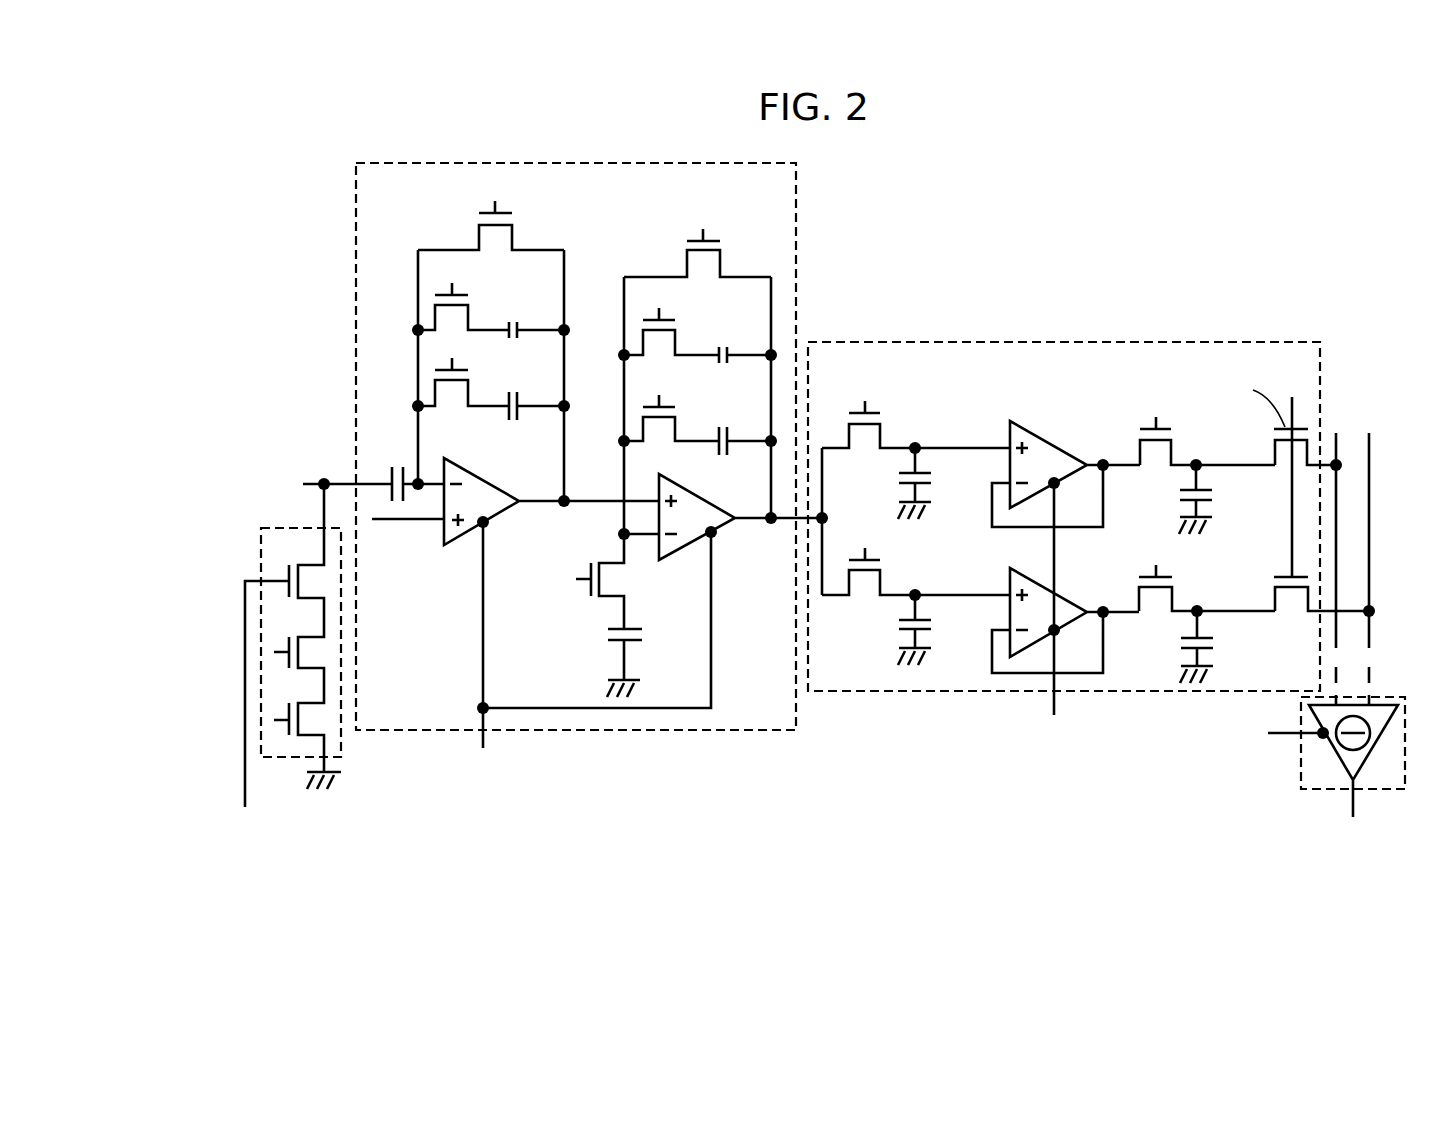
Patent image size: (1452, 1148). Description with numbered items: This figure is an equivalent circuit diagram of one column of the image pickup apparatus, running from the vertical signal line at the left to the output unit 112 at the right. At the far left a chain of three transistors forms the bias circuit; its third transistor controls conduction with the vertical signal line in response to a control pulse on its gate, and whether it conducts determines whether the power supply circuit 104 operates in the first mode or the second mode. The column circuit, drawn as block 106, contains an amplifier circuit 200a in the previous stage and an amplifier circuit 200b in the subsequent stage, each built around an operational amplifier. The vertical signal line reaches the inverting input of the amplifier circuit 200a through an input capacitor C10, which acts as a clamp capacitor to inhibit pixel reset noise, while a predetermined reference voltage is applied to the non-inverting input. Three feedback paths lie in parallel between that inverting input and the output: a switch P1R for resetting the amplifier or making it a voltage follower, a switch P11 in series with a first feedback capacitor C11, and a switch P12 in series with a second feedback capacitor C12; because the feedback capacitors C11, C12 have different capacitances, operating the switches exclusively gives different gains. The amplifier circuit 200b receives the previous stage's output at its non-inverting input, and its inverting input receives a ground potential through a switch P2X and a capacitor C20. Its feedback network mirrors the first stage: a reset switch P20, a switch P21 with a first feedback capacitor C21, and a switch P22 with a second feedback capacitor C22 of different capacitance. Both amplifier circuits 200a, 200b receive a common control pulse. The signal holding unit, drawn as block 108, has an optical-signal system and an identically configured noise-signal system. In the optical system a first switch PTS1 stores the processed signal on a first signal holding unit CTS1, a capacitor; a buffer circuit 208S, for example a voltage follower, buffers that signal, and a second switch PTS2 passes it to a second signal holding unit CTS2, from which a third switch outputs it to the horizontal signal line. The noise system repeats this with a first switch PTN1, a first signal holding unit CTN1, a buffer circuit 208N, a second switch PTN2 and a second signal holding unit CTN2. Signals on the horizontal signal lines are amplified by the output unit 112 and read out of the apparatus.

The power supply circuit 104 is at (341, 740).
The amplifier circuit 106 is at (562, 479).
The sample and hold circuit 108 is at (1091, 548).
The output unit 112 is at (1393, 790).
The amplifier circuit in the previous stage 200a is at (458, 531).
The amplifier circuit in the subsequent stage 200b is at (700, 543).
The buffer circuit 208S is at (1026, 424).
The buffer circuit 208N is at (1060, 591).
The input capacitor C10 is at (393, 466).
The first feedback capacitor C11 is at (513, 392).
The second feedback capacitor C12 is at (513, 322).
The capacitor C20 is at (643, 632).
The first feedback capacitor C21 is at (723, 426).
The second feedback capacitor C22 is at (723, 347).
The switch P1R is at (497, 236).
The switch P11 is at (454, 390).
The switch P12 is at (454, 314).
The switch P20 is at (705, 262).
The switch P21 is at (661, 426).
The switch P22 is at (661, 340).
The switch P2X is at (625, 581).
The first switch PTS1 is at (867, 433).
The second switch PTS2 is at (1153, 462).
The first switch PTN1 is at (867, 580).
The second switch PTN2 is at (1153, 605).
The first signal holding unit CTS1 is at (932, 473).
The second signal holding unit CTS2 is at (1214, 493).
The first signal holding unit CTN1 is at (932, 619).
The second signal holding unit CTN2 is at (1215, 641).